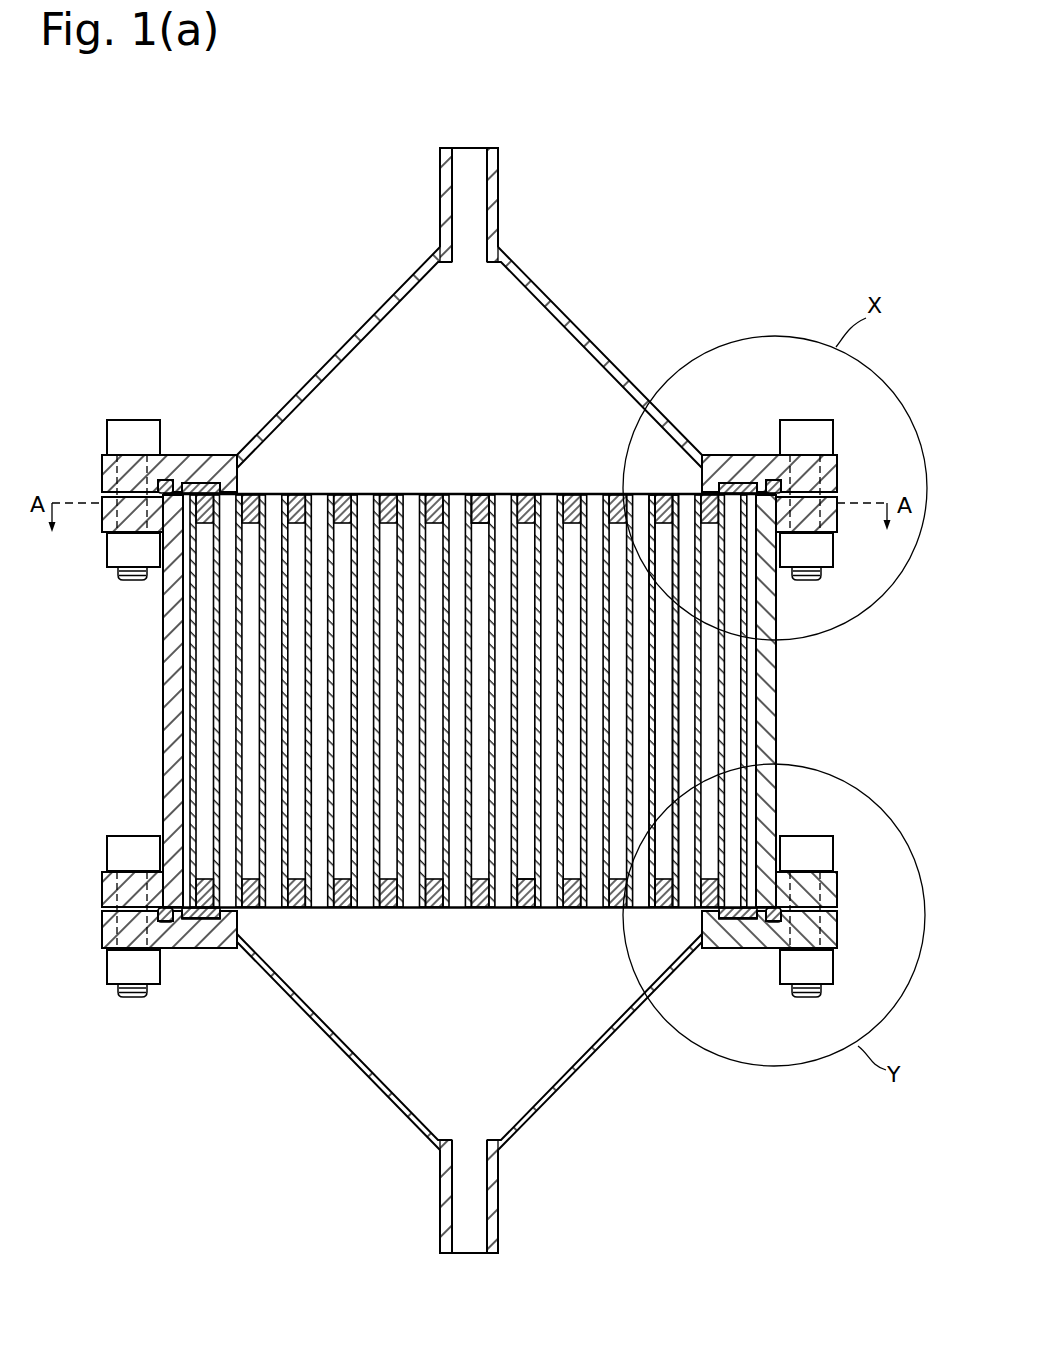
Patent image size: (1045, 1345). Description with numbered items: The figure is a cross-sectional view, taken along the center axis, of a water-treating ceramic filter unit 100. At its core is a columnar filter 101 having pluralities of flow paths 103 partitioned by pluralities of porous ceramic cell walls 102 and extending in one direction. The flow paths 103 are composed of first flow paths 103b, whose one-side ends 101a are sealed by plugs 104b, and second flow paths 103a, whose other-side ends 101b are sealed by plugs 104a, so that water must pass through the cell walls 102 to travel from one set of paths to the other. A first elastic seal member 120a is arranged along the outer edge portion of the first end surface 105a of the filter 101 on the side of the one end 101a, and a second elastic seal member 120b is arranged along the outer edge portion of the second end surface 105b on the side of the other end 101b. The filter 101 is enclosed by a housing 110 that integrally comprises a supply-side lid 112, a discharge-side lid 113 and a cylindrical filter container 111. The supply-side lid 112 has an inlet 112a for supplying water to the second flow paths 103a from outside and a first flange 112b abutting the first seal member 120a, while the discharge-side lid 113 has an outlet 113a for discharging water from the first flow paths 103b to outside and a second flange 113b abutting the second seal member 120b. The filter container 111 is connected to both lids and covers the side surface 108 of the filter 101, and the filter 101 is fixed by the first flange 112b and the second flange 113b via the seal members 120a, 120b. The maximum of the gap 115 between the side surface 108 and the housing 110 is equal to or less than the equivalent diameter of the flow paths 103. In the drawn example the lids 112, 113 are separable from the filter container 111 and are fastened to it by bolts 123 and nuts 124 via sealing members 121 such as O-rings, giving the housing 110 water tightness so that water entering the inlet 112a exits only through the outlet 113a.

The water-treating ceramic filter unit 100 is at (660, 236).
The filter 101 is at (742, 800).
The one end 101a is at (525, 900).
The other end 101b is at (483, 505).
The porous ceramic cell walls 102 is at (238, 690).
The flow paths 103 is at (897, 630).
The second flow paths 103a is at (653, 645).
The first flow paths 103b is at (676, 663).
The plugs 104a is at (445, 497).
The plugs 104b is at (402, 902).
The first end surface 105a is at (556, 953).
The second end surface 105b is at (534, 440).
The side surface 108 is at (190, 652).
The housing 110 is at (616, 368).
The filter container 111 is at (522, 702).
The supply-side lid 112 is at (469, 1042).
The inlet 112a is at (468, 1240).
The first flange 112b is at (218, 938).
The discharge-side lid 113 is at (492, 357).
The outlet 113a is at (465, 157).
The second flange 113b is at (213, 470).
The gap 115 is at (178, 735).
The first elastic seal member 120a is at (198, 922).
The second elastic seal member 120b is at (212, 490).
The sealing members 121 is at (165, 484).
The bolts 123 is at (130, 440).
The nuts 124 is at (130, 548).